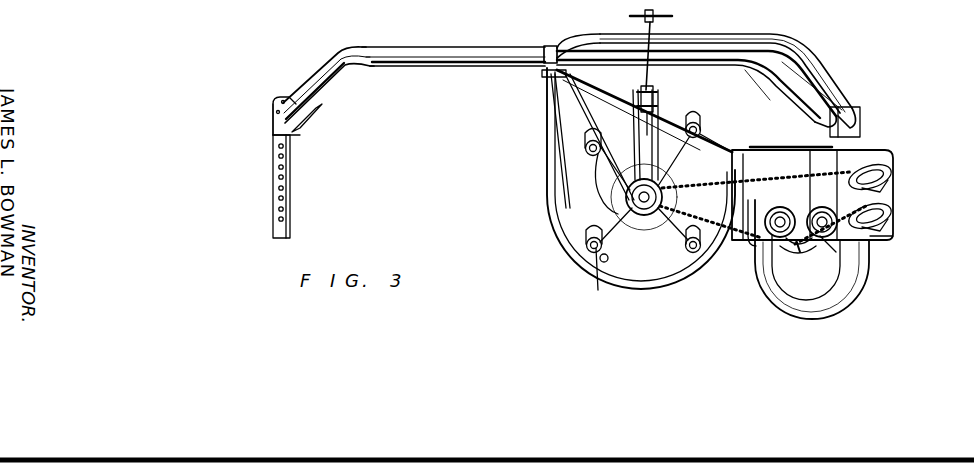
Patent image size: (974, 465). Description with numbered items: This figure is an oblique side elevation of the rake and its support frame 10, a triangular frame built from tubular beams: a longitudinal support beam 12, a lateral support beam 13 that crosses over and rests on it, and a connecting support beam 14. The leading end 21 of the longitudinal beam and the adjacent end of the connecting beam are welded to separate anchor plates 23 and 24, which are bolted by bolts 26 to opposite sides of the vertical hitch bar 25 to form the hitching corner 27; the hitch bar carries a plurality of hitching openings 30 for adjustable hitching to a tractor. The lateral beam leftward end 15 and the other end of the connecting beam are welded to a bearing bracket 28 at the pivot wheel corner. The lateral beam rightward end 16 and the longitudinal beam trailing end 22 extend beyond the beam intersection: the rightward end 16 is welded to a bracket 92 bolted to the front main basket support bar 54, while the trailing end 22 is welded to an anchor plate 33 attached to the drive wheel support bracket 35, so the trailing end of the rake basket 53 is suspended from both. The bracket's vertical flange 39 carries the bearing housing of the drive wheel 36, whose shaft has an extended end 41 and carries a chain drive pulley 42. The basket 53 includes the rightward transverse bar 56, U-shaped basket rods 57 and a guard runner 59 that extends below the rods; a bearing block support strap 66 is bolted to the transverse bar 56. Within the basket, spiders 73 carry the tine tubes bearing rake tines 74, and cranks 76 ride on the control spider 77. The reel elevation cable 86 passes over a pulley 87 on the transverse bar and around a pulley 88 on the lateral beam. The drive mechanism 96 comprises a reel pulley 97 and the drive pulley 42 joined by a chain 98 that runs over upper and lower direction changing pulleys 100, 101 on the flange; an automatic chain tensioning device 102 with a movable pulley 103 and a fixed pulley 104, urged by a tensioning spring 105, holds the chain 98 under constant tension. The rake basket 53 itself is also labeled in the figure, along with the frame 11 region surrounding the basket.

The support frame 10 is at (609, 68).
The U-shaped frame 11 is at (598, 199).
The longitudinal support beam 12 is at (434, 59).
The lateral support beam 13 is at (727, 36).
The connecting support beam 14 is at (760, 60).
The leftward end of lateral beam 15 is at (796, 84).
The rightward end of lateral beam 16 is at (579, 40).
The leading end of longitudinal beam 21 is at (334, 74).
The trailing end of longitudinal beam 22 is at (746, 86).
The anchor plate 23 is at (280, 133).
The anchor plate 24 is at (304, 118).
The vertical hitch bar 25 is at (288, 203).
The bolts 26 is at (288, 104).
The hitching corner 27 is at (268, 108).
The bearing bracket 28 is at (856, 128).
The hitching openings 30 is at (278, 168).
The anchor plate 33 is at (840, 148).
The drive wheel support bracket 35 is at (852, 198).
The drive wheel 36 is at (828, 268).
The vertical flange 39 is at (880, 156).
The extended end of drive shaft 41 is at (750, 246).
The chain drive pulley 42 is at (802, 246).
The rake basket 53 is at (545, 178).
The front main basket support bar 54 is at (548, 72).
The rightward transverse bar 56 is at (598, 84).
The U-shaped basket rods 57 is at (636, 282).
The guard runner 59 is at (558, 246).
The bearing block support strap 66 is at (604, 97).
The spiders 73 is at (616, 230).
The rake tines 74 is at (596, 290).
The crank 76 is at (590, 140).
The control spider 77 is at (602, 208).
The reel elevation cable 86 is at (656, 42).
The pulley 87 is at (656, 96).
The pulley 88 is at (632, 14).
The bracket 92 is at (546, 46).
The drive mechanism 96 is at (838, 246).
The reel pulley 97 is at (644, 212).
The chain 98 is at (702, 252).
The upper direction changing pulley 100 is at (892, 175).
The lower direction changing pulley 101 is at (893, 213).
The automatic chain tensioning device 102 is at (790, 205).
The movable pulley 103 is at (742, 176).
The fixed pulley 104 is at (872, 236).
The tensioning spring 105 is at (758, 148).